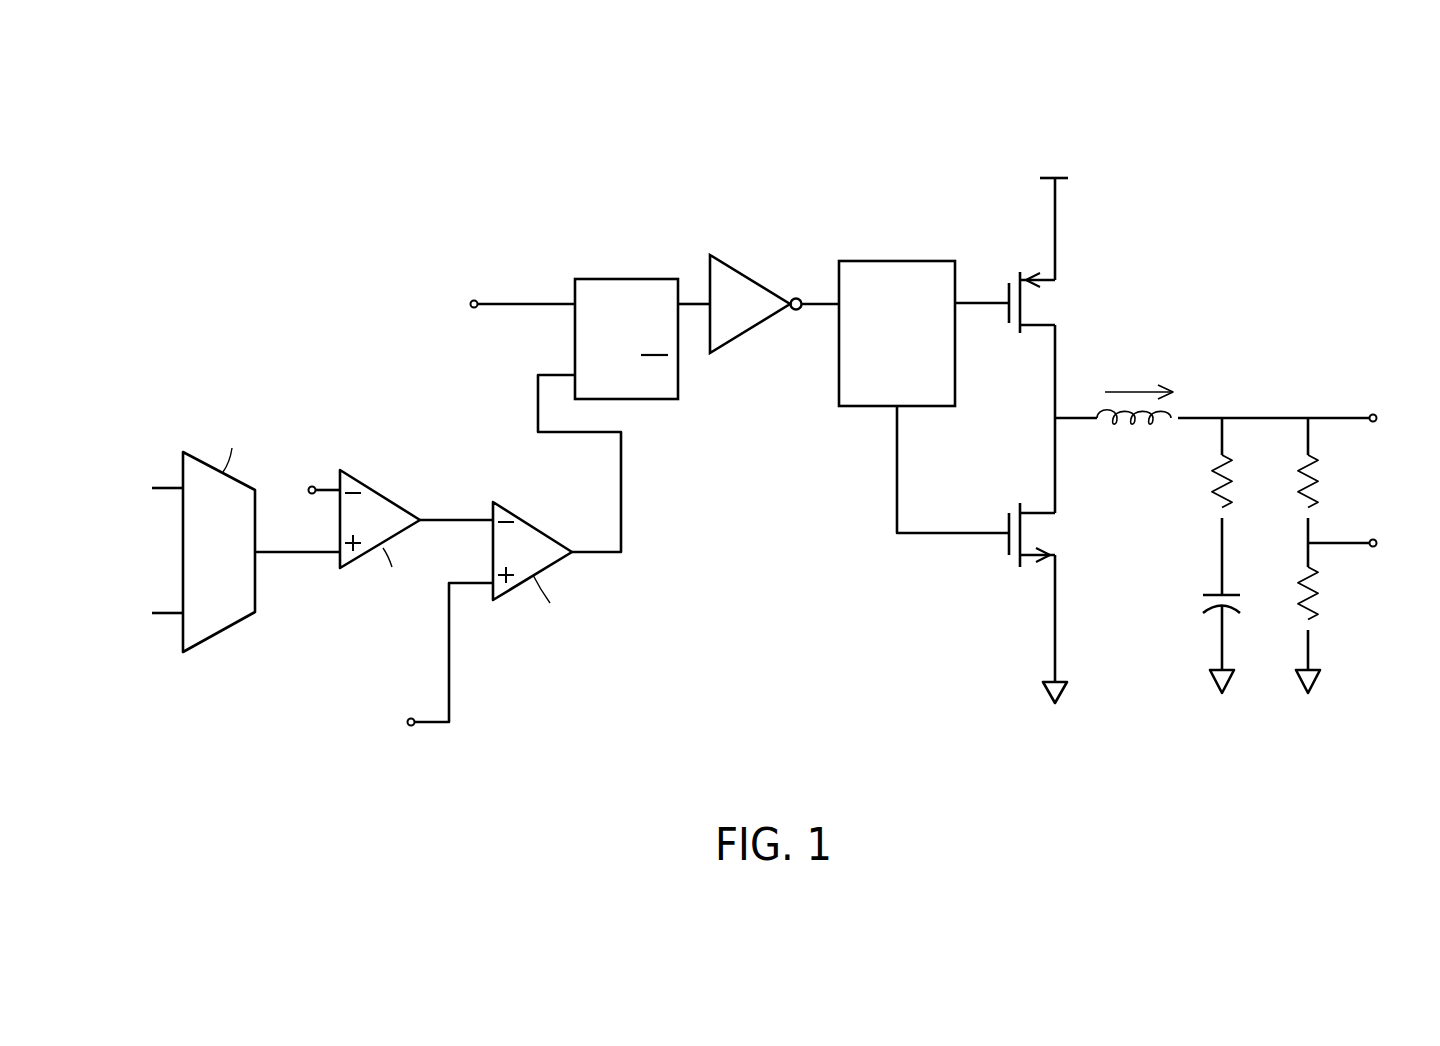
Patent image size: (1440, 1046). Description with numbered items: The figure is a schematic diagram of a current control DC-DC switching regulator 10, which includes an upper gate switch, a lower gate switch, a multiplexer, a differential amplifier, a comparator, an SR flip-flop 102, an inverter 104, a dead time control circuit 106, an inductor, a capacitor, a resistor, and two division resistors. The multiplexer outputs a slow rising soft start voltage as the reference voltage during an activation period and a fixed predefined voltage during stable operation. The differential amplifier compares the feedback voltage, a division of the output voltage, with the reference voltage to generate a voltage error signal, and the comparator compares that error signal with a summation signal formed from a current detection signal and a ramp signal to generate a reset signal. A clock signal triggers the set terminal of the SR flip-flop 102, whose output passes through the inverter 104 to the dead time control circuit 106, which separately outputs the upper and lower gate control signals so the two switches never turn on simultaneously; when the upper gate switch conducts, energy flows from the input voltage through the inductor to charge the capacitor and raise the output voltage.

The current control DC-DC switching regulator 10 is at (1251, 137).
The SR flip-flop 102 is at (625, 279).
The inverter 104 is at (752, 275).
The dead time control circuit 106 is at (895, 261).